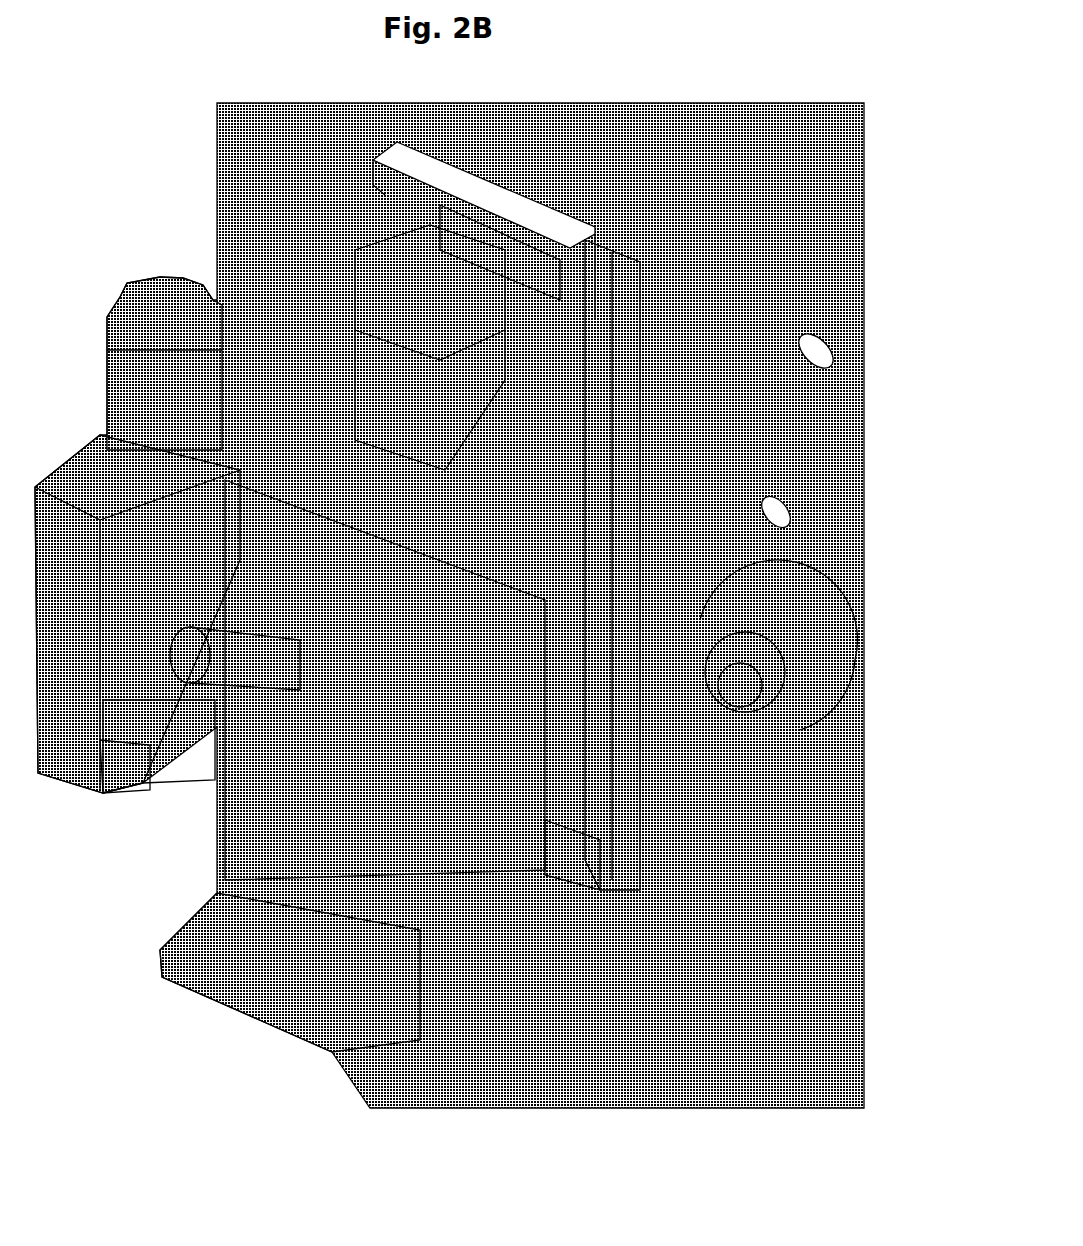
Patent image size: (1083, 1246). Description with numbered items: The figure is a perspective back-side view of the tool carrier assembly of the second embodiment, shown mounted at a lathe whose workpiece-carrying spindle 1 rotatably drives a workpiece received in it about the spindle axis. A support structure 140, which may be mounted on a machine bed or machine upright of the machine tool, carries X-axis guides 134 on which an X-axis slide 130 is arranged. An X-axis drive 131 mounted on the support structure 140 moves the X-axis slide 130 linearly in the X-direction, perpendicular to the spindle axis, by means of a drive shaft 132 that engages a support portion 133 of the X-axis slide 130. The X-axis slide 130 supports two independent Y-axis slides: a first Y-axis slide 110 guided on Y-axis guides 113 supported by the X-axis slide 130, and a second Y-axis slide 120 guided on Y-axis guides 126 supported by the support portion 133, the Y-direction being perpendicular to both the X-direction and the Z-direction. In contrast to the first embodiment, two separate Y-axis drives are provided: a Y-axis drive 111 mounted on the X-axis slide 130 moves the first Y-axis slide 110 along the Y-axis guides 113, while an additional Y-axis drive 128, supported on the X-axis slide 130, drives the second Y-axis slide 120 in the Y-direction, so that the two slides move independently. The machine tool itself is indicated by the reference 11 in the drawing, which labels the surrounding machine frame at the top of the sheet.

The workpiece-carrying spindle 1 is at (800, 617).
The base plate 11 is at (657, 136).
The first Y-axis slide 110 is at (525, 204).
The Y-axis drive 111 is at (432, 243).
The Y-axis guides 113 is at (372, 160).
The second Y-axis slide 120 is at (60, 463).
The Y-axis guides 126 is at (110, 793).
The Y-axis drive 128 is at (143, 277).
The X-axis slide 130 is at (560, 500).
The X-axis drive 131 is at (285, 1000).
The drive shaft 132 is at (205, 660).
The support portion 133 is at (127, 753).
The X-axis guides 134 is at (600, 870).
The support structure 140 is at (235, 968).